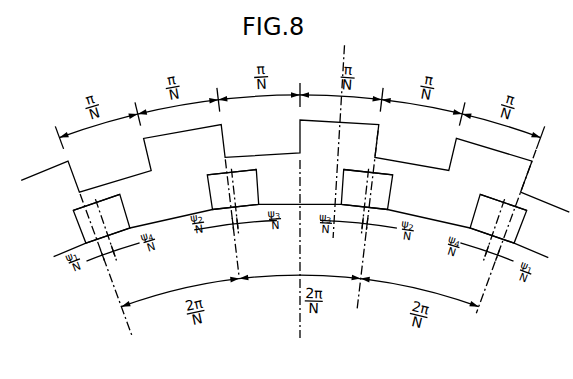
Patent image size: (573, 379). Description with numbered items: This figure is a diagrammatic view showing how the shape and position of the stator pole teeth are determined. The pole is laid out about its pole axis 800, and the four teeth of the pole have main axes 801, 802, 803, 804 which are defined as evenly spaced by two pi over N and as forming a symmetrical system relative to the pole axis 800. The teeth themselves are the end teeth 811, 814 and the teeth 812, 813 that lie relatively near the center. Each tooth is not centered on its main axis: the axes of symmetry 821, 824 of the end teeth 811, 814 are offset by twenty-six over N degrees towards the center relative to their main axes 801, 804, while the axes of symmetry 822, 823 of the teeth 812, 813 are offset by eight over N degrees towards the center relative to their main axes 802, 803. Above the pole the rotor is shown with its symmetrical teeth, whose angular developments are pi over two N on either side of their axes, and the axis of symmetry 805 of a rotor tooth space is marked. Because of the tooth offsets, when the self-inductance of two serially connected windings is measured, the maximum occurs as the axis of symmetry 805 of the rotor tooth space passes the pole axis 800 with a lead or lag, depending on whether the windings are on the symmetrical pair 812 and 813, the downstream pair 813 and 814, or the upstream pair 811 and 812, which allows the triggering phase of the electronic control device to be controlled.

The pole axis 800 is at (301, 338).
The main axis of first end tooth 801 is at (131, 316).
The main axis of second tooth 802 is at (246, 293).
The main axis of third tooth 803 is at (362, 300).
The main axis of fourth end tooth 804 is at (479, 315).
The axis of symmetry of a rotor tooth space 805 is at (345, 52).
The end tooth 811 is at (84, 216).
The tooth near the center 812 is at (214, 182).
The tooth near the center 813 is at (350, 181).
The end tooth 814 is at (484, 214).
The axis of symmetry of end tooth 821 is at (92, 198).
The axis of symmetry of tooth 822 is at (236, 172).
The axis of symmetry of tooth 823 is at (371, 168).
The axis of symmetry of end tooth 824 is at (508, 203).